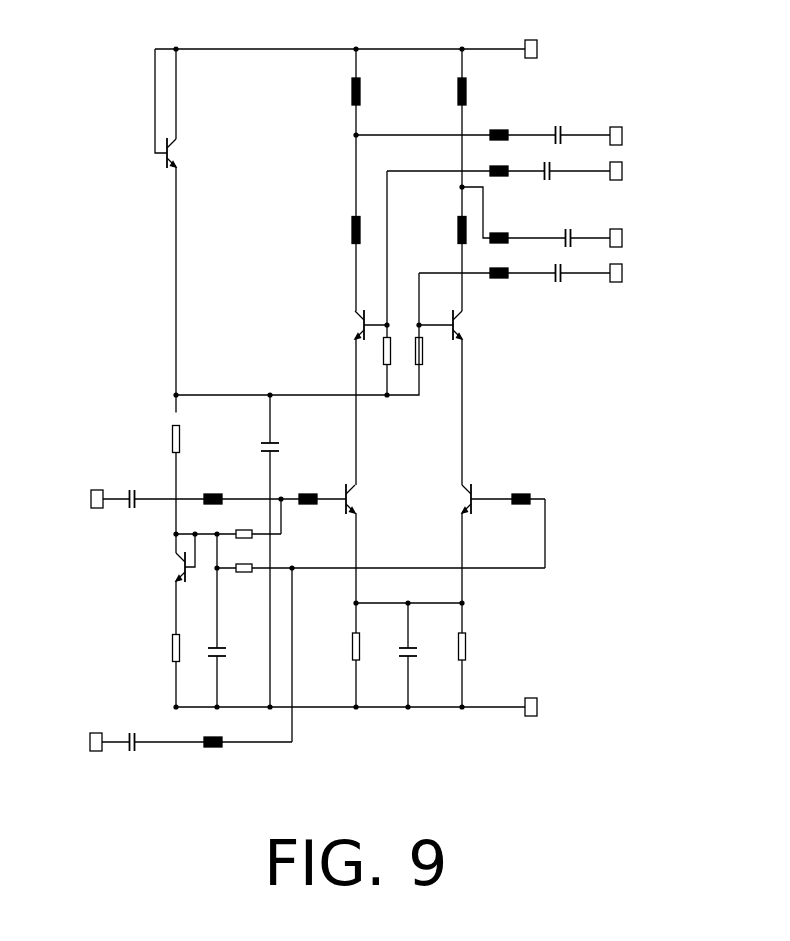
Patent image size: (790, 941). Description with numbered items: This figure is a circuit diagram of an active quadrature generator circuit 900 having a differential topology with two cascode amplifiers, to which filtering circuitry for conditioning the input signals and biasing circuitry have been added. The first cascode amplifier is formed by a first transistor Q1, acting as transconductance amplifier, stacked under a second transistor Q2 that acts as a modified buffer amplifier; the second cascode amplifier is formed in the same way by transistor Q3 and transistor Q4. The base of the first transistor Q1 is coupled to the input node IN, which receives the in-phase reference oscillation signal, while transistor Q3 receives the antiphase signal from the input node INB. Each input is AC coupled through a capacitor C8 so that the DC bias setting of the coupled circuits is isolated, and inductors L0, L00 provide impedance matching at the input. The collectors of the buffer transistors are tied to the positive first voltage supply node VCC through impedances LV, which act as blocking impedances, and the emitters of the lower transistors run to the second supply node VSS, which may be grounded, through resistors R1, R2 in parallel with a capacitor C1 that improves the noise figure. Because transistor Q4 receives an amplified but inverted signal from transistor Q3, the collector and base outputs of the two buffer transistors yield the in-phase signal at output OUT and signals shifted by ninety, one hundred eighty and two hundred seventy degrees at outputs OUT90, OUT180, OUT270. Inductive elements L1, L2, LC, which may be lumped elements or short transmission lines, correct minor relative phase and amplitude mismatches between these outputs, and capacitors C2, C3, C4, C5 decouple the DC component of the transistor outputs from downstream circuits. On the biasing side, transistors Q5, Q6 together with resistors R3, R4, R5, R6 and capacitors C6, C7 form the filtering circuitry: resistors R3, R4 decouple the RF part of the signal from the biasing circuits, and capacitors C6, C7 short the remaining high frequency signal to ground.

The active quadrature generator circuit 900 is at (136, 67).
The first transistor Q1 is at (363, 499).
The second transistor Q2 is at (357, 323).
The transistor Q3 is at (466, 497).
The transistor Q4 is at (470, 325).
The transistor Q5 is at (177, 576).
The transistor Q6 is at (183, 153).
The resistor R1 is at (358, 641).
The resistor R2 is at (465, 643).
The resistor R3 is at (390, 348).
The resistor R4 is at (250, 531).
The resistor R5 is at (174, 441).
The resistor R6 is at (172, 652).
The capacitor C1 is at (414, 654).
The capacitor C2 is at (556, 124).
The capacitor C3 is at (543, 182).
The capacitor C4 is at (564, 228).
The capacitor C5 is at (556, 285).
The capacitor C6 is at (267, 447).
The capacitor C7 is at (225, 654).
The capacitor C8 is at (133, 489).
The impedance LV is at (366, 96).
The inductive element LC is at (353, 223).
The inductor L0 is at (213, 491).
The inductor L00 is at (300, 496).
The inductive element L1 is at (500, 130).
The inductive element L2 is at (493, 166).
The first voltage supply node VCC is at (542, 49).
The second supply node VSS is at (541, 707).
The input node IN is at (90, 499).
The input node INB is at (86, 742).
The in-phase signal output OUT is at (622, 123).
The output terminal 90 degrees OUT90 is at (626, 183).
The output terminal 180 degrees OUT180 is at (627, 228).
The output terminal 270 degrees OUT270 is at (628, 288).